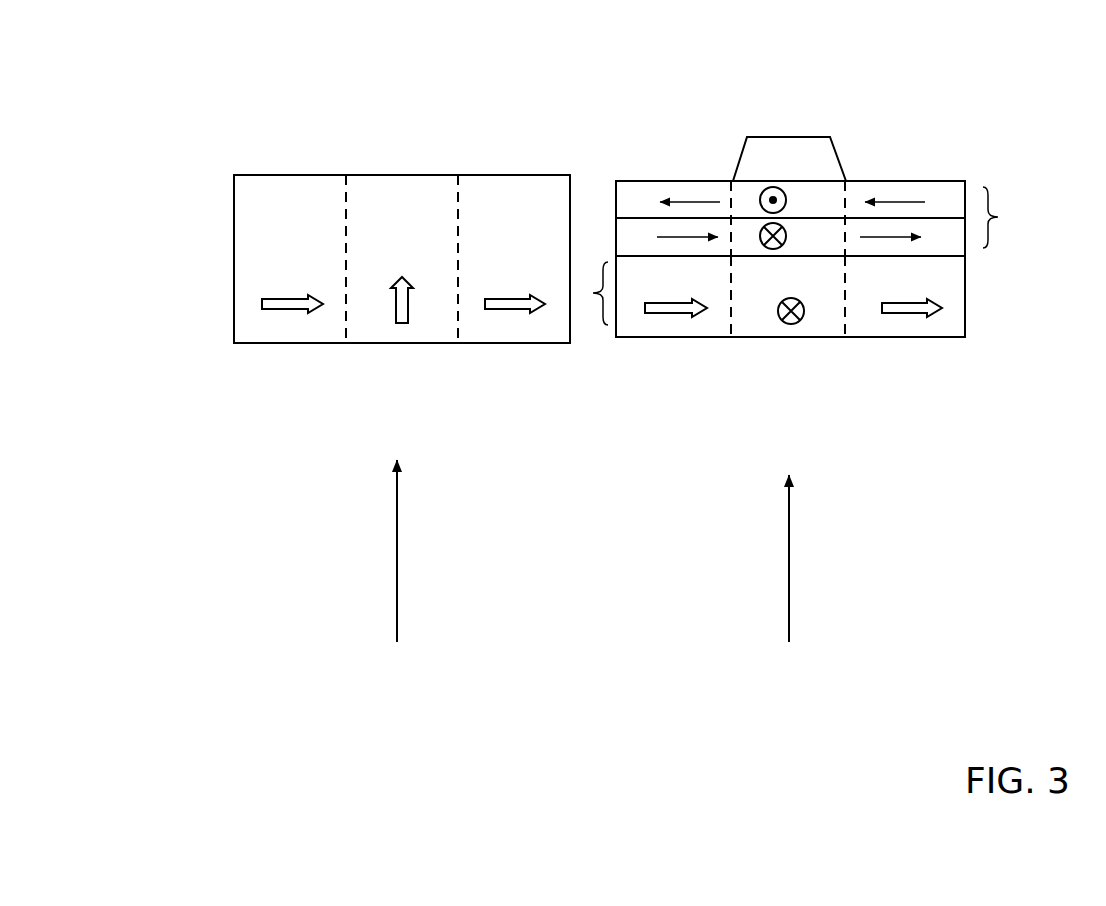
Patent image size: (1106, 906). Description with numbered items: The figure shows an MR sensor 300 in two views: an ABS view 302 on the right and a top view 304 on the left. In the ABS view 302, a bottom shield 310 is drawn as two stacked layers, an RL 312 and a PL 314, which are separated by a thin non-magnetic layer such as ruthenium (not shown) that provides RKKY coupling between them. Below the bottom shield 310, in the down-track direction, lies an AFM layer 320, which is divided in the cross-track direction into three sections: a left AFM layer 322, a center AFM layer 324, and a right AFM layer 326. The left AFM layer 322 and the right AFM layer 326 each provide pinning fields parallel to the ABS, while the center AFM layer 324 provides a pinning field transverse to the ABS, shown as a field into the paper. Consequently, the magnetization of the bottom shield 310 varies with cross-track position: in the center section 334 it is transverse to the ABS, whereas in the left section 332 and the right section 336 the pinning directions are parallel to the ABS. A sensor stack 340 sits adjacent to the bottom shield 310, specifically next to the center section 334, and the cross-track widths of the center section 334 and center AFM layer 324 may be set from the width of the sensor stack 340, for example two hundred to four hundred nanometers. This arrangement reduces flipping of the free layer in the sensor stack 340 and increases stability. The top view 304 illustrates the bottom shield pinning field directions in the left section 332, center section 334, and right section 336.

The MR sensor 300 is at (158, 105).
The ABS view 302 is at (790, 579).
The top view 304 is at (397, 576).
The bottom shield 310 is at (1011, 216).
The RL 312 is at (968, 189).
The PL 314 is at (970, 240).
The AFM layer 320 is at (590, 300).
The left AFM layer 322 is at (678, 339).
The center AFM layer 324 is at (790, 339).
The right AFM layer 326 is at (905, 338).
The left section 332 is at (668, 178).
The center section 334 is at (818, 179).
The right section 336 is at (918, 179).
The sensor stack 340 is at (782, 134).